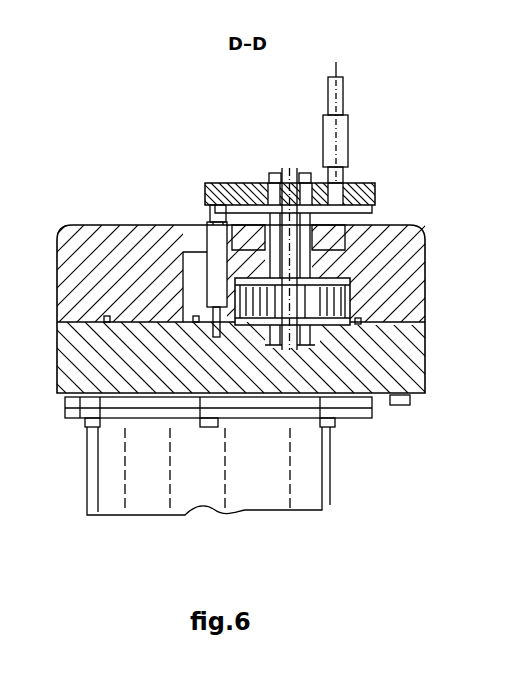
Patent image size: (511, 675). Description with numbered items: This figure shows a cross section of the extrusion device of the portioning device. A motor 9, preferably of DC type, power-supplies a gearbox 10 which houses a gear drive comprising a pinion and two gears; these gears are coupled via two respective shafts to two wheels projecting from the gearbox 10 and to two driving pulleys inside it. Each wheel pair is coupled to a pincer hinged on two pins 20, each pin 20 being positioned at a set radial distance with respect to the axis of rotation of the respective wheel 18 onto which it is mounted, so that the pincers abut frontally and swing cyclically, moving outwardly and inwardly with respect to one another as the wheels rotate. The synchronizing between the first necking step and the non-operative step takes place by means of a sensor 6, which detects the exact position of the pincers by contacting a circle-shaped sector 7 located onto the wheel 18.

The sensor 6 is at (213, 237).
The circle-shaped sector 7 is at (197, 223).
The motor 9 is at (305, 480).
The gearbox 10 is at (412, 360).
The wheel 18 is at (372, 184).
The pin 20 is at (345, 85).